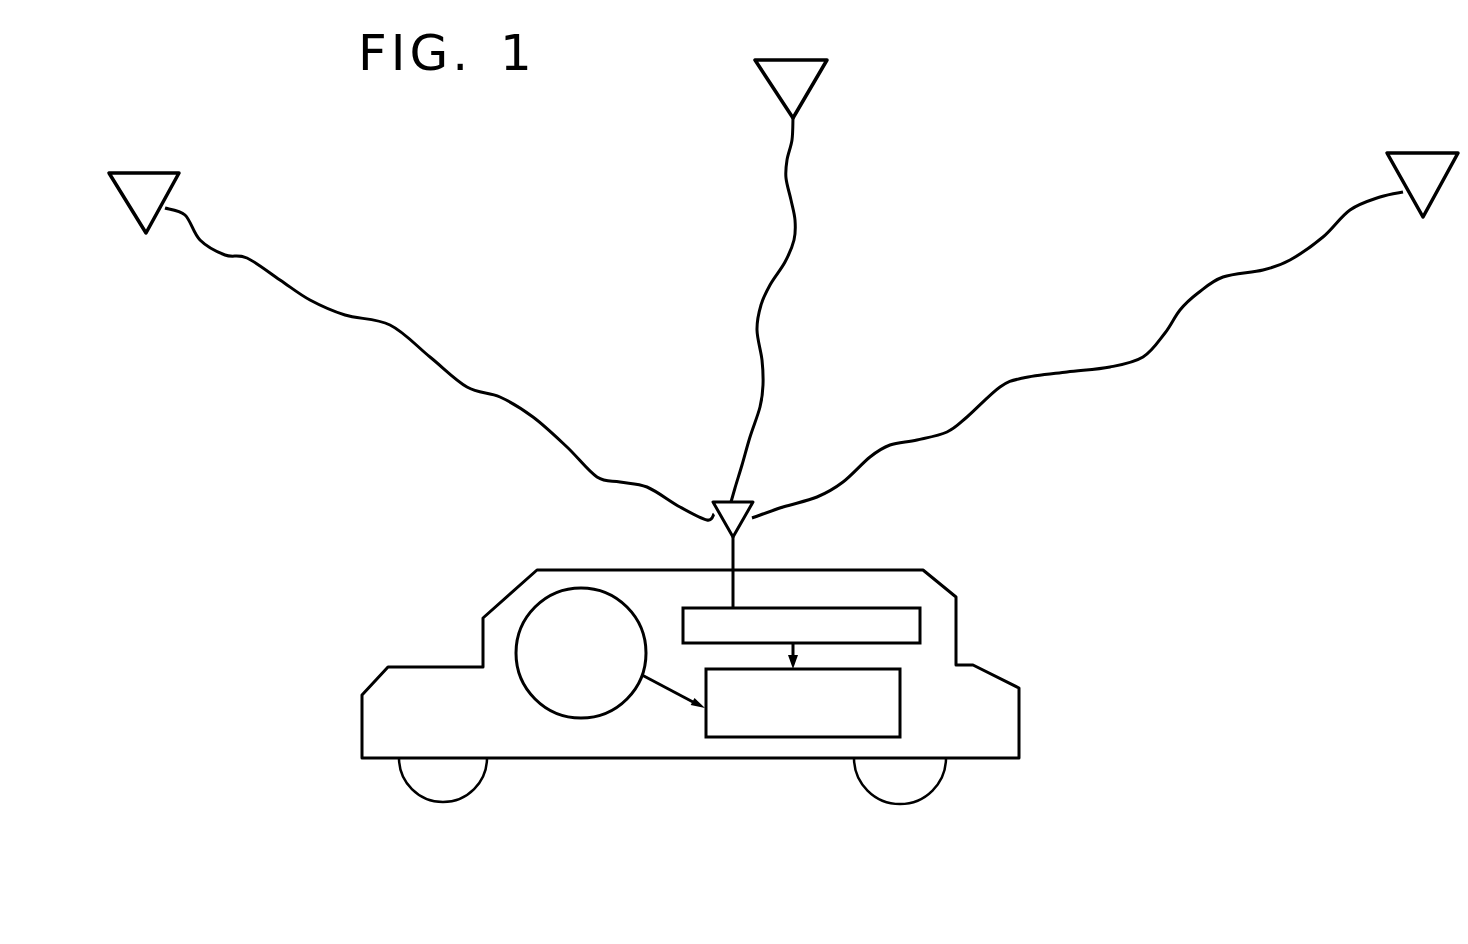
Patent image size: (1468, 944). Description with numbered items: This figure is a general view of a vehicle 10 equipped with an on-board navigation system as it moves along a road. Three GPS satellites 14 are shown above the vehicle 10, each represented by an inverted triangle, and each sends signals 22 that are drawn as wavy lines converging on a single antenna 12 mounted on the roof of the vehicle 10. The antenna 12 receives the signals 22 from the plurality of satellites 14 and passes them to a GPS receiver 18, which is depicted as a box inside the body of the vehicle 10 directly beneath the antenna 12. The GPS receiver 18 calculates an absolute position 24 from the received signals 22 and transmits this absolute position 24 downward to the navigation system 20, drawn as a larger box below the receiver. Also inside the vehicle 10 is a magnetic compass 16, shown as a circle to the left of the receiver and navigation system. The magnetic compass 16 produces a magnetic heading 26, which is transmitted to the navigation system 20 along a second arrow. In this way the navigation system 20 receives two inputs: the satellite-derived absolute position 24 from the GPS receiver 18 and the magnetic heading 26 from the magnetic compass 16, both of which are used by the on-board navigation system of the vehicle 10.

The vehicle 10 is at (363, 710).
The antenna 12 is at (728, 553).
The GPS satellites 14 is at (767, 88).
The magnetic compass 16 is at (527, 608).
The GPS receiver 18 is at (923, 610).
The navigation system 20 is at (782, 738).
The signals 22 is at (493, 390).
The absolute position 24 is at (795, 653).
The magnetic heading 26 is at (662, 692).